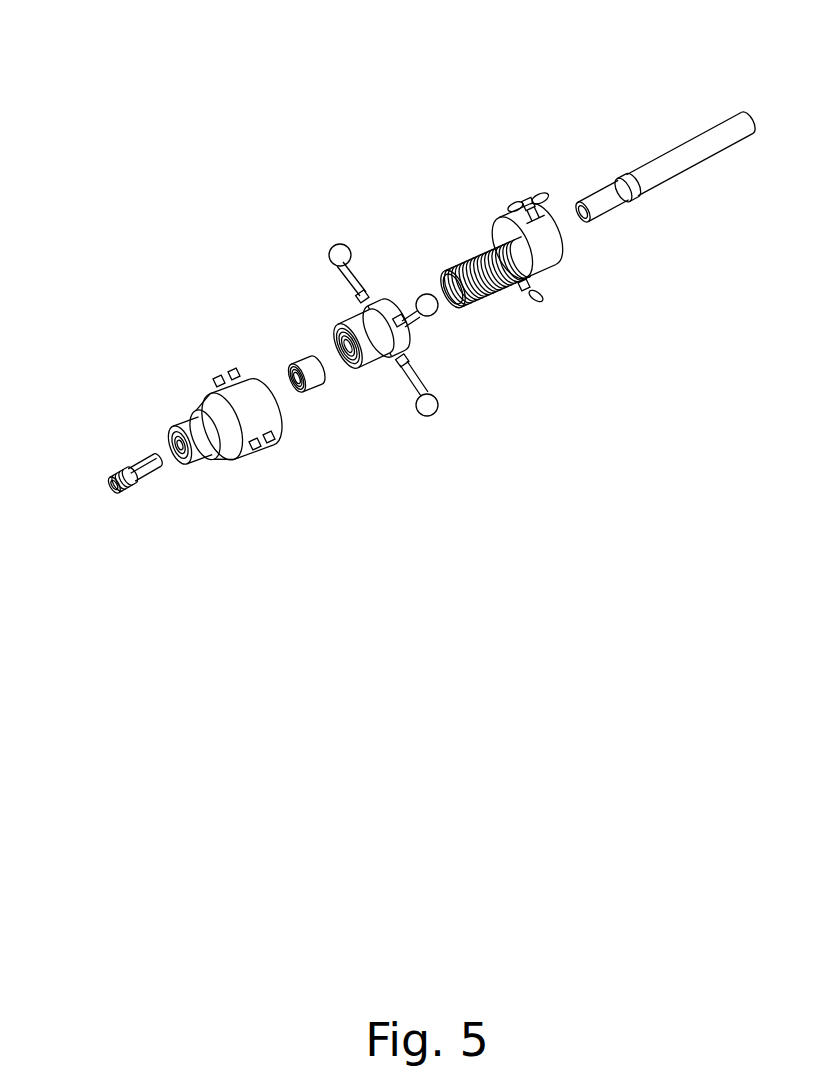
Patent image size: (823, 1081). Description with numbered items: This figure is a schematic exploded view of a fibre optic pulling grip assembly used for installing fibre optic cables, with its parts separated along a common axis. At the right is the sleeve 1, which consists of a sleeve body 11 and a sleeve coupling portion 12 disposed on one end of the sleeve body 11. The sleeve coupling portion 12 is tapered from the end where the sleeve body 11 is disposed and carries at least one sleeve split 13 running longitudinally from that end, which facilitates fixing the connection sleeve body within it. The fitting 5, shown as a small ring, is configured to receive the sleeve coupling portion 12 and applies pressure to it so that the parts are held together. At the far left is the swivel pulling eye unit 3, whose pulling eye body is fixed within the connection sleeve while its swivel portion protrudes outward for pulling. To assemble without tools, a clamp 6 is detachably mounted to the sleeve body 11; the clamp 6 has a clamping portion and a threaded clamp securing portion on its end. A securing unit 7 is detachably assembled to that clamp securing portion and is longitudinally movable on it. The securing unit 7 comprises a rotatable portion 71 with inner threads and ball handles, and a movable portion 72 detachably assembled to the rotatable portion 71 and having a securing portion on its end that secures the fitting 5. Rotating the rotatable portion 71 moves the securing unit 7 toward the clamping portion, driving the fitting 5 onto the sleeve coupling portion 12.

The sleeve 1 is at (603, 122).
The sleeve body 11 is at (690, 140).
The sleeve coupling portion 12 is at (594, 203).
The sleeve split 13 is at (622, 181).
The swivel pulling eye unit 3 is at (115, 472).
The fitting 5 is at (309, 368).
The clamp 6 is at (550, 257).
The securing unit 7 is at (351, 429).
The rotatable portion 71 is at (374, 360).
The movable portion 72 is at (255, 430).